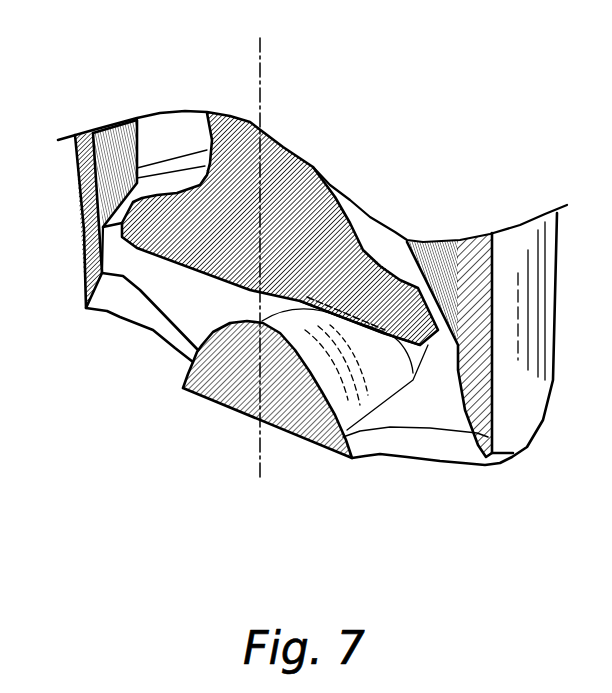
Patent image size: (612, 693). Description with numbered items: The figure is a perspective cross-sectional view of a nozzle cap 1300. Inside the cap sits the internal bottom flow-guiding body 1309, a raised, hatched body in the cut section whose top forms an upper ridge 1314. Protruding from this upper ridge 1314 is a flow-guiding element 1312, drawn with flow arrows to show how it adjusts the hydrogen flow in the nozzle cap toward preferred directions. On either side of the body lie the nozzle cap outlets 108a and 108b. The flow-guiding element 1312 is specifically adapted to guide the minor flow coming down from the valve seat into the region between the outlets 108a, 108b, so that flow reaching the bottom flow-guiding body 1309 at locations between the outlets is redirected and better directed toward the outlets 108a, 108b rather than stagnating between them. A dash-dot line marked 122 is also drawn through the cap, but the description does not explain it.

The central axis 122 is at (260, 98).
The upper ridge 1314 is at (306, 330).
The nozzle cap outlet 108b is at (108, 331).
The internal bottom flow-guiding body 1309 is at (258, 392).
The nozzle cap 1300 is at (312, 326).
The flow-guiding element 1312 is at (377, 350).
The nozzle cap outlet 108a is at (408, 455).